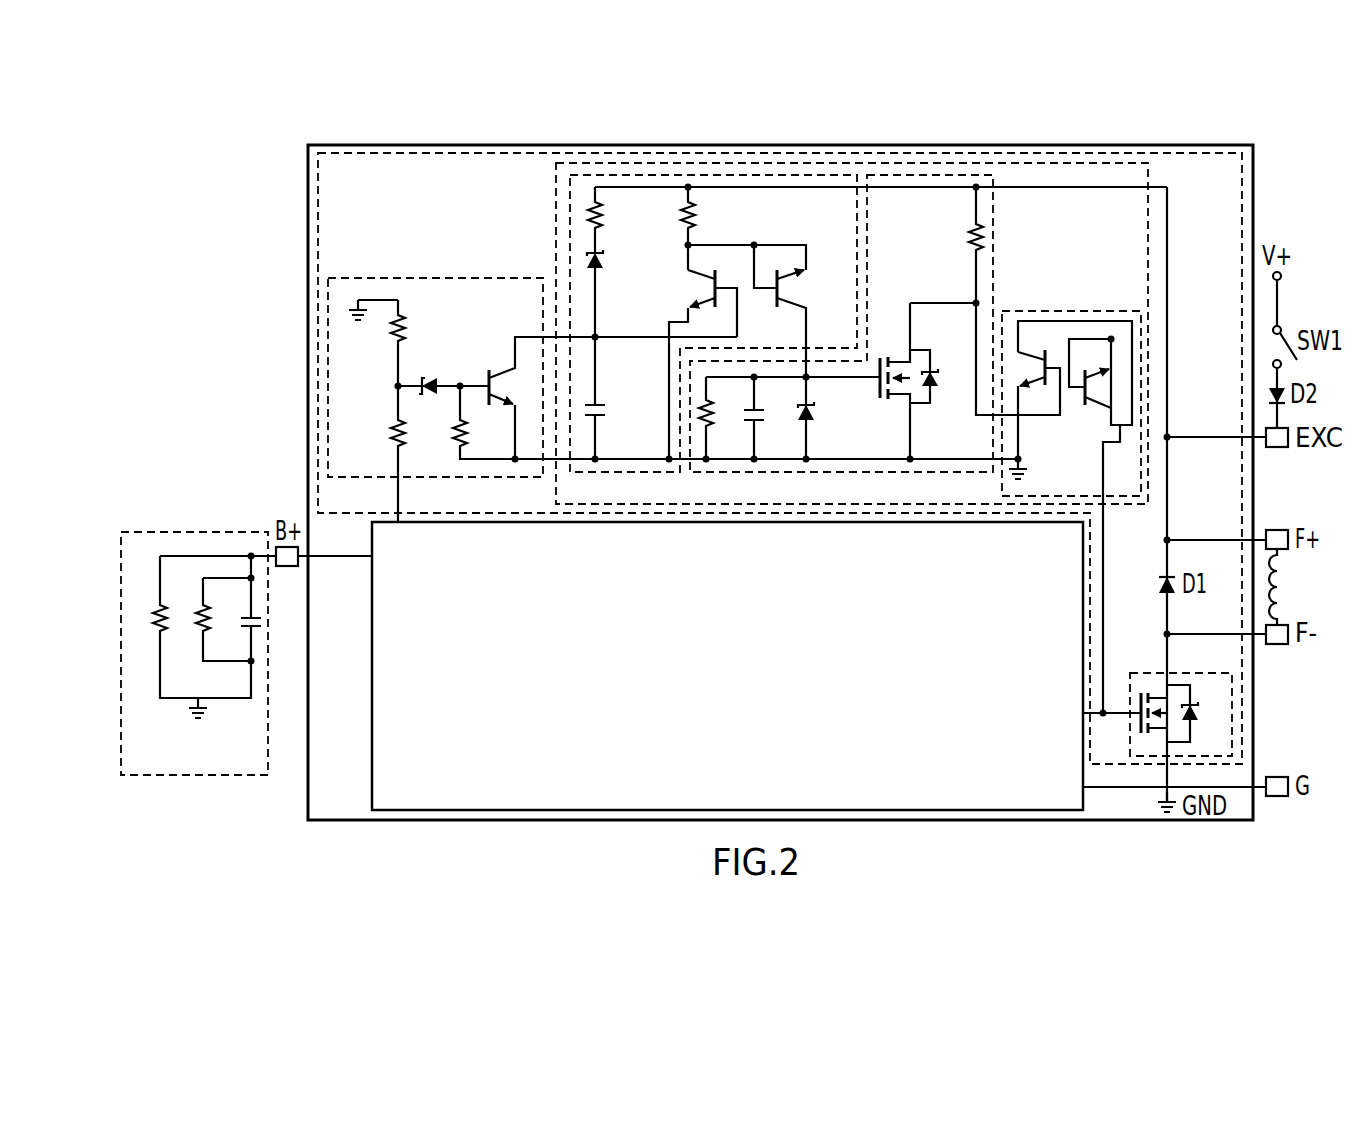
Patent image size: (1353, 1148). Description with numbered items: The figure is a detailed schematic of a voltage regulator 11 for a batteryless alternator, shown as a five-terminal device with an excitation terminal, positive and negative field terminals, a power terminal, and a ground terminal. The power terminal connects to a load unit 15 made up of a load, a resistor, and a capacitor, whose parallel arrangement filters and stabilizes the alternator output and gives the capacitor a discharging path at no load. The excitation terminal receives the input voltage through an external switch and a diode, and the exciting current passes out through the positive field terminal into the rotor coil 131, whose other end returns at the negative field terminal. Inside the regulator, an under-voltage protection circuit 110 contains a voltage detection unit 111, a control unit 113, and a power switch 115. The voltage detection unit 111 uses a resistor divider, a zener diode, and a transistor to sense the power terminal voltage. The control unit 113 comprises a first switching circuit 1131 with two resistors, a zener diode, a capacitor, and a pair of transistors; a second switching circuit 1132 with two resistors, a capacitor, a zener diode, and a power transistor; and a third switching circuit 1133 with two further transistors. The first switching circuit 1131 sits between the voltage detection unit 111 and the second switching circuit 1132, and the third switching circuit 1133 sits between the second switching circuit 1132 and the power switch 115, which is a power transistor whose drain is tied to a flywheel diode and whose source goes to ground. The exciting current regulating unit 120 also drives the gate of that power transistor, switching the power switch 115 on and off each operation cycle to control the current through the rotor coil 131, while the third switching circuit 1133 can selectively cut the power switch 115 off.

The voltage regulator 11 is at (308, 178).
The under-voltage protection circuit 110 is at (318, 228).
The voltage detection unit 111 is at (440, 278).
The control unit 113 is at (556, 192).
The first switching circuit 1131 is at (620, 472).
The second switching circuit 1132 is at (993, 213).
The third switching circuit 1133 is at (1066, 311).
The power switch 115 is at (1232, 718).
The exciting current regulating unit 120 is at (372, 695).
The rotor coil 131 is at (1283, 588).
The load unit 15 is at (196, 531).